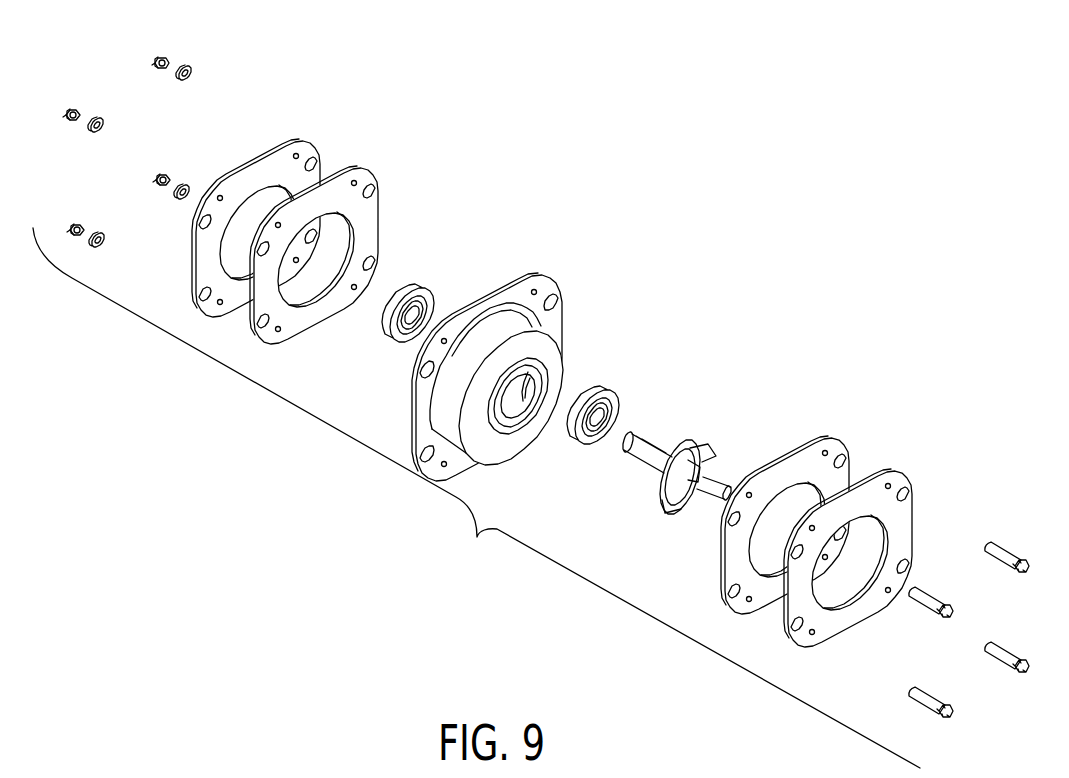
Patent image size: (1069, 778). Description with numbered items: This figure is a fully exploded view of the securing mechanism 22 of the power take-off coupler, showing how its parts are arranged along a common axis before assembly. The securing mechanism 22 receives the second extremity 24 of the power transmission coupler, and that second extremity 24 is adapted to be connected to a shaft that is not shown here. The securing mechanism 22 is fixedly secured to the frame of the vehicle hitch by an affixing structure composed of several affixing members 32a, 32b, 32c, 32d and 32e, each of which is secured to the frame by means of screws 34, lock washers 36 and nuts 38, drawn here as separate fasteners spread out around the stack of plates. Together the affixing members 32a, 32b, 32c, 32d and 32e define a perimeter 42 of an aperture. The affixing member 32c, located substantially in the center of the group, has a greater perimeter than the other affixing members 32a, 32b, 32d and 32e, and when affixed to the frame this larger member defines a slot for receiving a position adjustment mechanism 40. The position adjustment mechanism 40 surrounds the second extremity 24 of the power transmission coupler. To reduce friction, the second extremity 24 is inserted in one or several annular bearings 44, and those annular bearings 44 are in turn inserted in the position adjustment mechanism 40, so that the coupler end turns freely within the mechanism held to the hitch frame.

The securing mechanism 22 is at (657, 158).
The second extremity 24 is at (660, 490).
The affixing member 32a is at (322, 160).
The affixing member 32b is at (380, 203).
The affixing member 32c is at (560, 305).
The affixing member 32d is at (851, 460).
The affixing member 32e is at (913, 494).
The screws 34 is at (1002, 554).
The lock washers 36 is at (100, 118).
The nuts 38 is at (77, 108).
The position adjustment mechanism 40 is at (557, 368).
The perimeter 42 is at (285, 280).
The annular bearings 44 is at (431, 299).